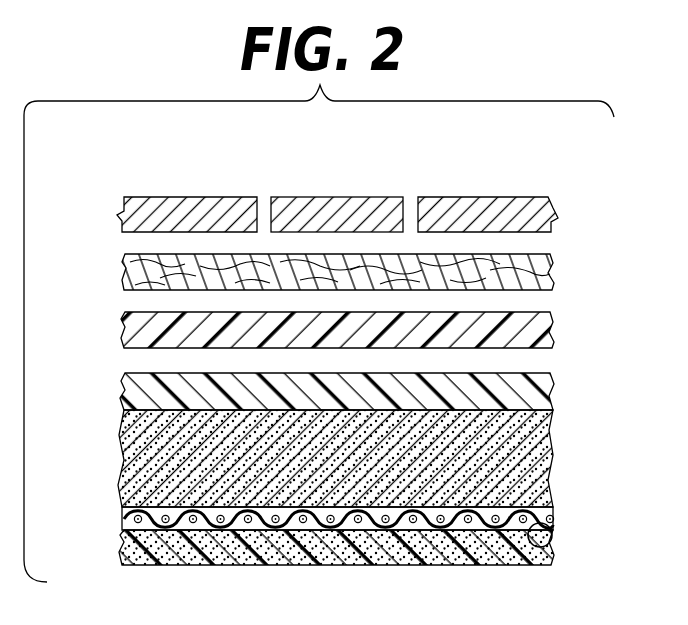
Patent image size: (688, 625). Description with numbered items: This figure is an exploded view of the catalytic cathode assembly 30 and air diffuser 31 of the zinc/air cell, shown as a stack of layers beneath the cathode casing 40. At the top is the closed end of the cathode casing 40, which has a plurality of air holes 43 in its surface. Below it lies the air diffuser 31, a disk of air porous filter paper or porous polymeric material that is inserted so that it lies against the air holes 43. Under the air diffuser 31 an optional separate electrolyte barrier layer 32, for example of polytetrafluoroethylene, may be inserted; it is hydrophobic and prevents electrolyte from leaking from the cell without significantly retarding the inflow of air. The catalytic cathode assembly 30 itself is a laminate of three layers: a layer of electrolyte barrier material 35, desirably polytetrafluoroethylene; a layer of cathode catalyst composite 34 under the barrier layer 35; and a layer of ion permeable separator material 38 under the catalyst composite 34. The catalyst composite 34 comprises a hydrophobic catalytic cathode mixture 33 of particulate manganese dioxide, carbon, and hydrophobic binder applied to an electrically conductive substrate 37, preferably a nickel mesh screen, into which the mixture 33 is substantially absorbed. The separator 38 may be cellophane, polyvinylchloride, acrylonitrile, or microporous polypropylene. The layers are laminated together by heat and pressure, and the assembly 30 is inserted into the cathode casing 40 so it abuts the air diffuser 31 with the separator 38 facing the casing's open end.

The catalytic cathode assembly 30 is at (103, 372).
The air diffuser 31 is at (545, 280).
The electrolyte barrier layer 32 is at (545, 333).
The catalytic cathode mixture 33 is at (540, 440).
The catalytic cathode composite 34 is at (563, 468).
The electrolyte barrier layer 35 is at (550, 395).
The electrically conductive substrate 37 is at (551, 547).
The ion permeable separator 38 is at (510, 560).
The cathode casing 40 is at (537, 213).
The air holes 43 is at (263, 200).